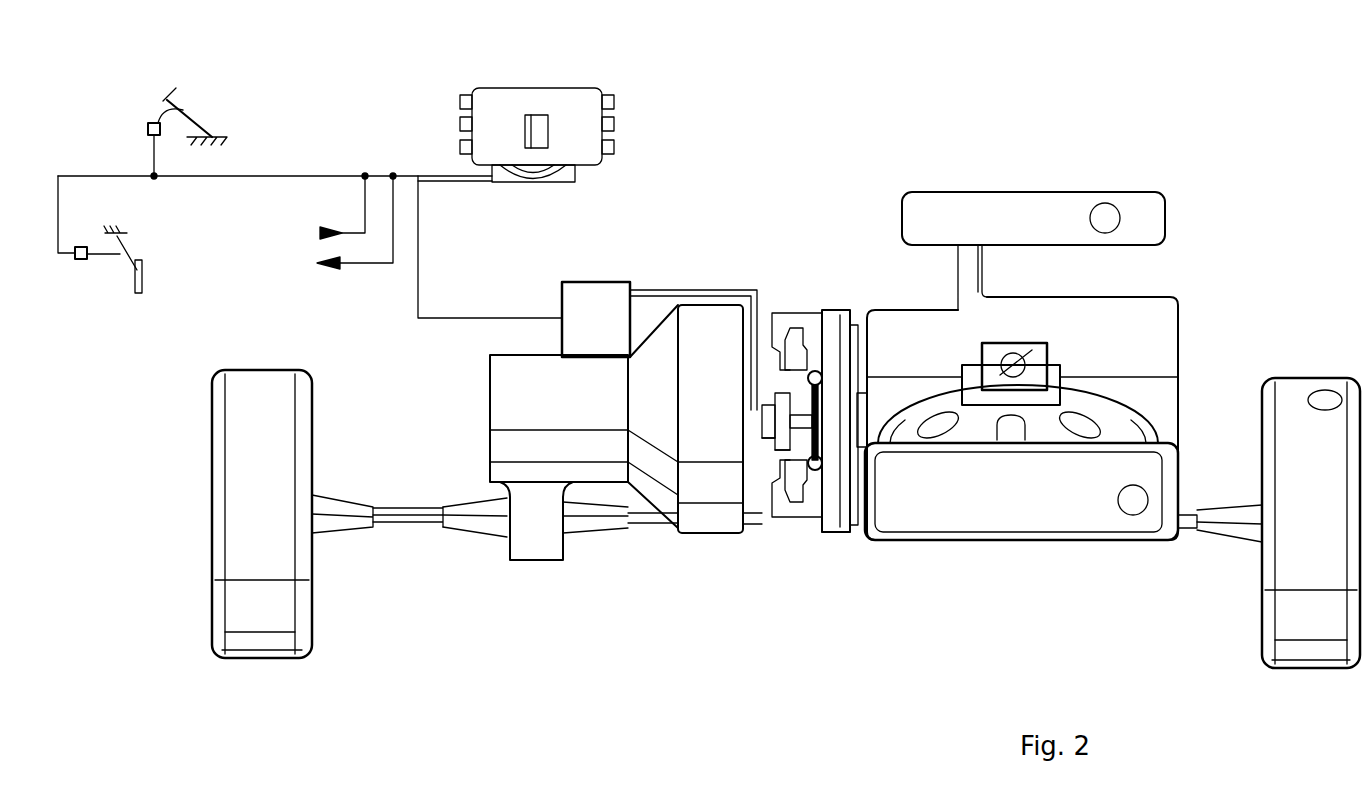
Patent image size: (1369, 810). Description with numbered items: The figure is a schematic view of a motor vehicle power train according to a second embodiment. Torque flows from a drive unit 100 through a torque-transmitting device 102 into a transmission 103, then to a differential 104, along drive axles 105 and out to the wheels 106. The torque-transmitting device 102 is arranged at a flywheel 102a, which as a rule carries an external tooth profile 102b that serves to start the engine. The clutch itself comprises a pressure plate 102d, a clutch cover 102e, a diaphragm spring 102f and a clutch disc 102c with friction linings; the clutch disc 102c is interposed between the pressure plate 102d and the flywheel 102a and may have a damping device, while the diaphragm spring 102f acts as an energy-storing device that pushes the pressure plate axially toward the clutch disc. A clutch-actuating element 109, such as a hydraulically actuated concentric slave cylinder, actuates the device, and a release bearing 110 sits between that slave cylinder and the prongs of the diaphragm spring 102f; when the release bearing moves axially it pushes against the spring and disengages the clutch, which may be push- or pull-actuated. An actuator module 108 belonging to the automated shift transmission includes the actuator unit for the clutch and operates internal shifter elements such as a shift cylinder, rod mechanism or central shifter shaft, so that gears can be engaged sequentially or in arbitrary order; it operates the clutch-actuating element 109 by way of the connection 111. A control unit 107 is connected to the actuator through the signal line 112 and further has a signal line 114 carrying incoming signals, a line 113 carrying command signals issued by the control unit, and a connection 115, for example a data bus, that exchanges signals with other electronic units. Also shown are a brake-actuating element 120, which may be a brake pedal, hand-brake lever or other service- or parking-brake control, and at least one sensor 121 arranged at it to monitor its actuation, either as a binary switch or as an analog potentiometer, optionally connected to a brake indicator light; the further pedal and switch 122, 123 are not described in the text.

The drive unit 100 is at (1110, 352).
The torque-transmitting device 102 is at (835, 330).
The flywheel 102a is at (830, 520).
The external tooth profile 102b is at (835, 328).
The clutch disc 102c is at (818, 330).
The pressure plate 102d is at (795, 322).
The clutch cover 102e is at (788, 520).
The diaphragm spring 102f is at (765, 330).
The transmission 103 is at (710, 485).
The differential 104 is at (530, 530).
The drive axles 105 is at (412, 515).
The wheels 106 is at (242, 510).
The control unit 107 is at (503, 103).
The actuator module 108 is at (576, 333).
The clutch-actuating element 109 is at (765, 417).
The release bearing 110 is at (777, 472).
The connection 111 is at (682, 290).
The signal line 112 is at (485, 318).
The signal line 113 is at (352, 267).
The signal line 114 is at (352, 230).
The connection 115 is at (345, 175).
The brake-actuating element 120 is at (145, 284).
The sensor 121 is at (82, 262).
The brake pedal 122 is at (168, 100).
The brake switch 123 is at (148, 127).